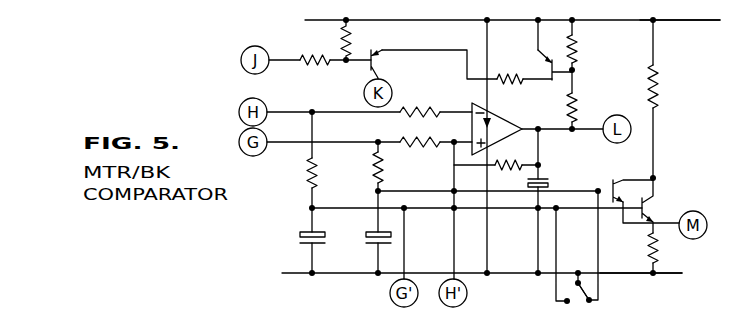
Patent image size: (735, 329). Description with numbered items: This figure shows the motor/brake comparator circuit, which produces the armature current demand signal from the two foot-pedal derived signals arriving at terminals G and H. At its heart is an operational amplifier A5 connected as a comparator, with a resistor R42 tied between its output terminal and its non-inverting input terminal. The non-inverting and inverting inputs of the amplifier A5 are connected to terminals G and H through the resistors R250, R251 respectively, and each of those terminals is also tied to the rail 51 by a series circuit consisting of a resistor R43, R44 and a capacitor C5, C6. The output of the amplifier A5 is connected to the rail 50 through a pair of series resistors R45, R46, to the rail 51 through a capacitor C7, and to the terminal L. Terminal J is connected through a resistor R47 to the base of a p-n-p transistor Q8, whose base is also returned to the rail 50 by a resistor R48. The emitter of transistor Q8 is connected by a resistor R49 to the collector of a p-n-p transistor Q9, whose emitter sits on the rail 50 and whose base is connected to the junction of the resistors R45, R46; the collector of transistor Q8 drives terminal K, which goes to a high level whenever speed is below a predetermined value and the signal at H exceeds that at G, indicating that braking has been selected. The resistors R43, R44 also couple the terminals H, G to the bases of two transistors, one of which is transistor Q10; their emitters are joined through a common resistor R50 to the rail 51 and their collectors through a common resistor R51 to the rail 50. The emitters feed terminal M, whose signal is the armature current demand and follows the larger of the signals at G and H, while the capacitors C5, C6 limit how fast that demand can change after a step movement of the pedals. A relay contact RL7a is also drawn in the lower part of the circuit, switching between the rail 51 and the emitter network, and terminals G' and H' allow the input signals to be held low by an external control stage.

The resistor R47 is at (309, 53).
The resistor R48 is at (372, 43).
The p-n-p transistor Q8 is at (385, 63).
The resistor R251 is at (422, 104).
The resistor R250 is at (426, 155).
The resistor R49 is at (502, 70).
The resistor R45 is at (580, 51).
The resistor R46 is at (582, 96).
The resistor R51 is at (662, 92).
The rail 50 is at (661, 22).
The operational amplifier A5 is at (504, 119).
The resistor R43 is at (305, 181).
The resistor R44 is at (371, 170).
The resistor R42 is at (496, 165).
The capacitor C7 is at (546, 183).
The p-n-p transistor Q9 is at (614, 179).
The transistor Q10 is at (655, 204).
The resistor R50 is at (660, 247).
The rail 51 is at (650, 278).
The relay contact RL7a is at (578, 303).
The capacitor C5 is at (298, 240).
The capacitor C6 is at (364, 240).